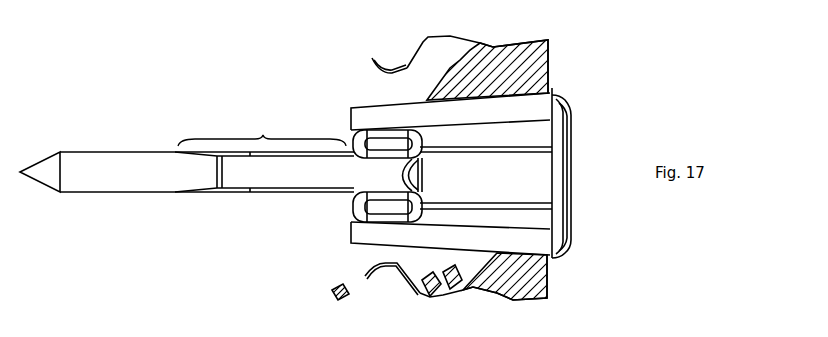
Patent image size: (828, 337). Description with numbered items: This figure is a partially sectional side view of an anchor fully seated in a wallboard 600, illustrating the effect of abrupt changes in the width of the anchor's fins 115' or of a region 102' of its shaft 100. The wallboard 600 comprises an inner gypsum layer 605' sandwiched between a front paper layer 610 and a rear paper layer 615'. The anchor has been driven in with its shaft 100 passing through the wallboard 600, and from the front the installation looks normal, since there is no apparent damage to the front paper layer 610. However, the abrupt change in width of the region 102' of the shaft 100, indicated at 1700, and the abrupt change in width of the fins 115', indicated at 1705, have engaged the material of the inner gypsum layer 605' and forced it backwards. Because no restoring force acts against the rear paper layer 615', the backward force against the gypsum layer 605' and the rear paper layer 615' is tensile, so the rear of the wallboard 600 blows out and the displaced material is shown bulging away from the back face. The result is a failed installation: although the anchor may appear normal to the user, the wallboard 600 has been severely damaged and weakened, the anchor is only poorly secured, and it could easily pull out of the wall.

The shaft 100 is at (93, 152).
The region of shaft 102' is at (262, 128).
The abrupt change in width of region of shaft 1700 is at (206, 184).
The fins 115' is at (413, 164).
The abrupt change in width of fins 1705 is at (338, 112).
The wallboard 600 is at (588, 39).
The gypsum layer 605' is at (446, 163).
The front paper layer 610 is at (553, 67).
The rear paper layer 615' is at (359, 163).